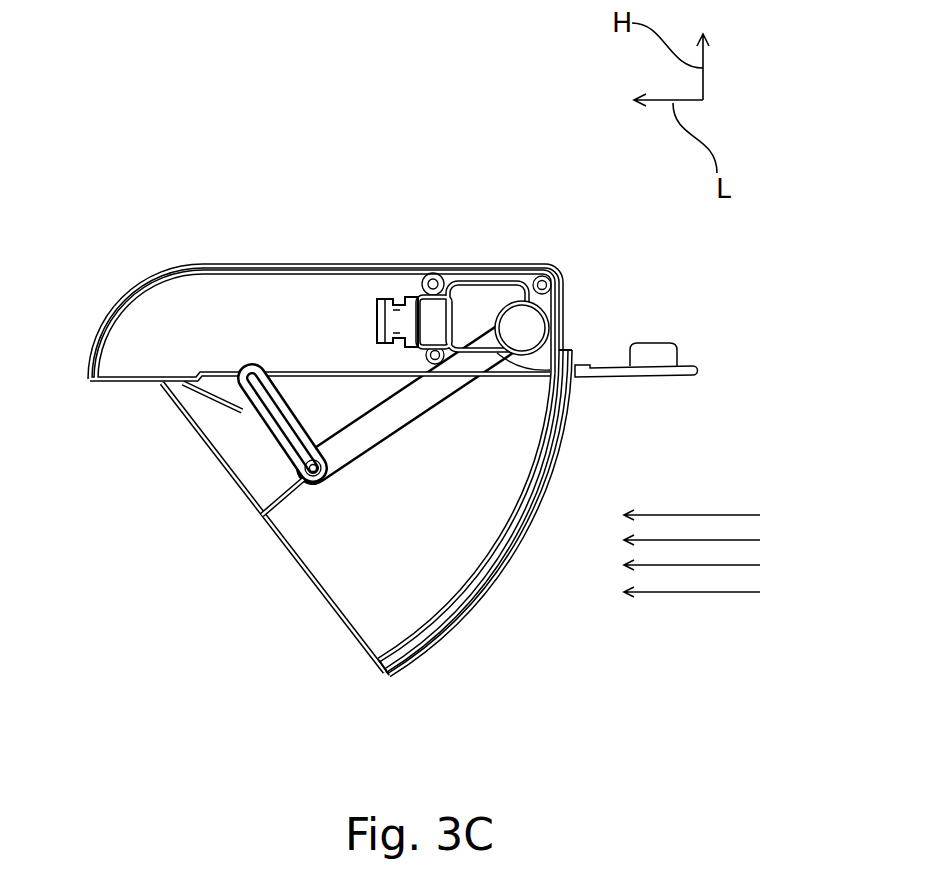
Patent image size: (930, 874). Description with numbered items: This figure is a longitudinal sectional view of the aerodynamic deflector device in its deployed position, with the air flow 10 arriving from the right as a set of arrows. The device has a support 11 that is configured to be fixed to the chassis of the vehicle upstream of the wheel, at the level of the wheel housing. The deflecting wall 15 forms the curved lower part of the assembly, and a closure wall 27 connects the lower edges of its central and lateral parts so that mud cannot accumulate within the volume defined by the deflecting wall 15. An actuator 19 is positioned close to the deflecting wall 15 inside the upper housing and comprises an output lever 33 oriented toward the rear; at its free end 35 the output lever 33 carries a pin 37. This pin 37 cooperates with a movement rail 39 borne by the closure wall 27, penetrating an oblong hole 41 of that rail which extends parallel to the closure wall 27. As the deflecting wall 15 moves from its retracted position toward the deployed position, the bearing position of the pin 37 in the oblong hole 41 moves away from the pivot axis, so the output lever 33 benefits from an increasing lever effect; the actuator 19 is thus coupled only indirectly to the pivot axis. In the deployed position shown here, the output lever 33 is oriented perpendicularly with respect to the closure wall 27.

The air flow 10 is at (690, 594).
The support 11 is at (686, 363).
The deflecting wall 15 is at (560, 437).
The actuator 19 is at (478, 300).
The closure wall 27 is at (316, 587).
The output lever 33 is at (368, 423).
The free end 35 is at (312, 416).
The pin 37 is at (311, 469).
The movement rail 39 is at (250, 452).
The oblong hole 41 is at (263, 393).